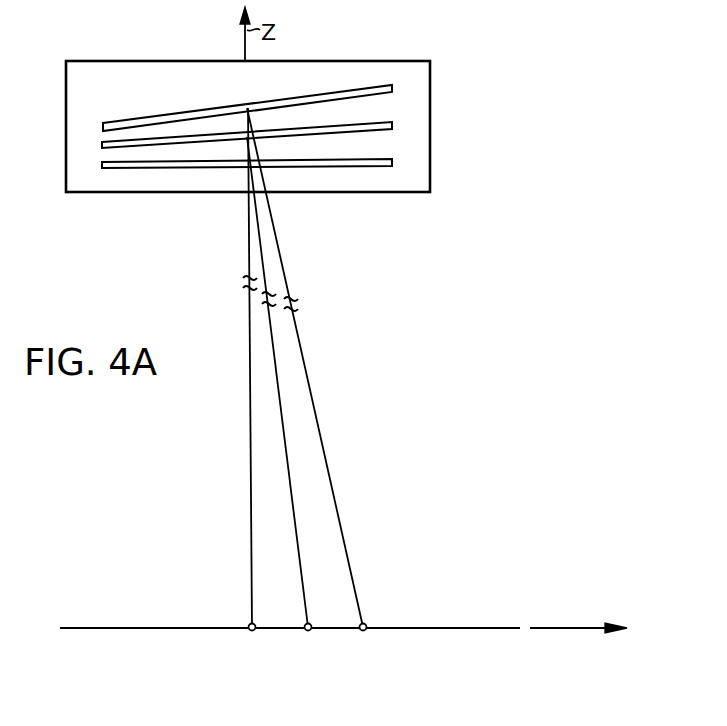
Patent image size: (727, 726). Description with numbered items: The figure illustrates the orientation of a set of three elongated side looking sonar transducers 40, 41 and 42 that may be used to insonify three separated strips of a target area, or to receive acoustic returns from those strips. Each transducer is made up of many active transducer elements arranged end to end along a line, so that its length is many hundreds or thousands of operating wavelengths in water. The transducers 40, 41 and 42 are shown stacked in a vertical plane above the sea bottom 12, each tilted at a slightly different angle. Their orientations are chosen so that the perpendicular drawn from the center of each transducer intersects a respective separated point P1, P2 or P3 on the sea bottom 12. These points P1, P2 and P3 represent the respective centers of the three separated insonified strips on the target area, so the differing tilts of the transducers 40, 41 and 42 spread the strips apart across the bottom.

The sea bottom 12 is at (130, 627).
The transducer 40 is at (397, 144).
The transducer 41 is at (392, 121).
The transducer 42 is at (328, 92).
The separated point P1 is at (250, 623).
The separated point P2 is at (306, 623).
The separated point P3 is at (366, 623).